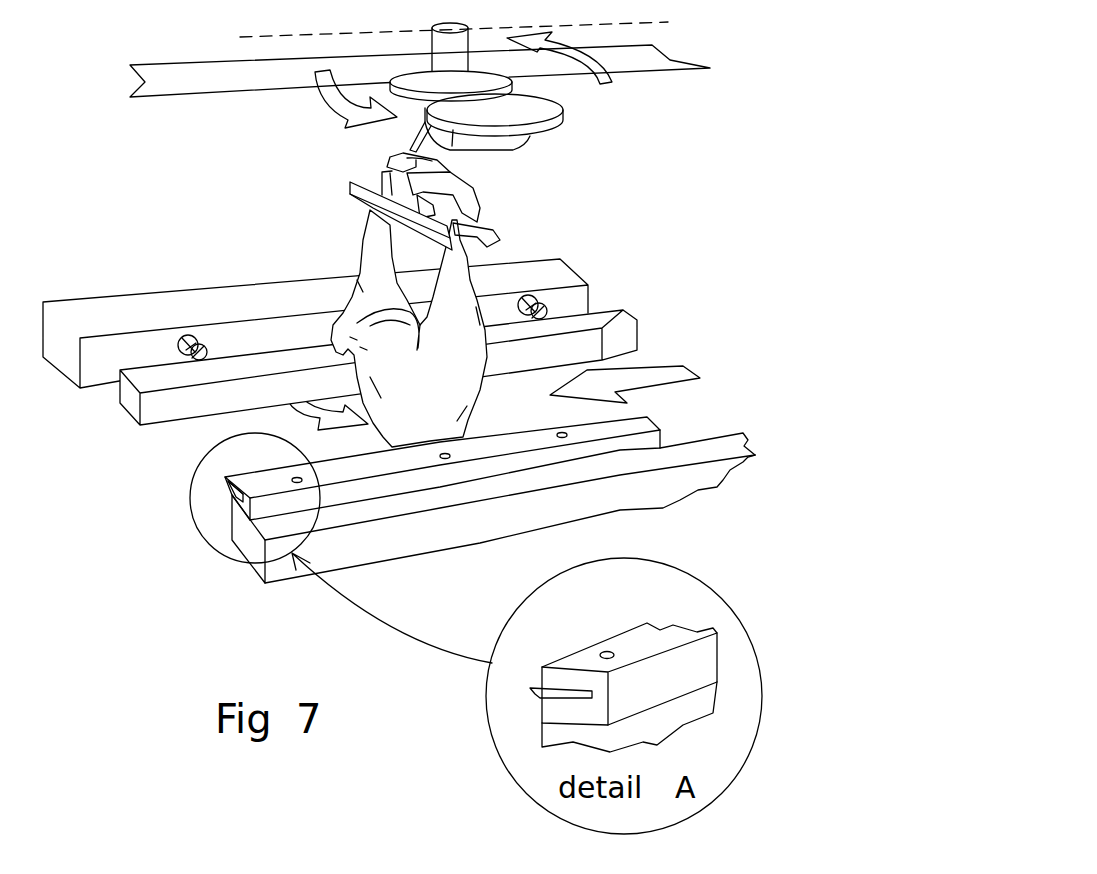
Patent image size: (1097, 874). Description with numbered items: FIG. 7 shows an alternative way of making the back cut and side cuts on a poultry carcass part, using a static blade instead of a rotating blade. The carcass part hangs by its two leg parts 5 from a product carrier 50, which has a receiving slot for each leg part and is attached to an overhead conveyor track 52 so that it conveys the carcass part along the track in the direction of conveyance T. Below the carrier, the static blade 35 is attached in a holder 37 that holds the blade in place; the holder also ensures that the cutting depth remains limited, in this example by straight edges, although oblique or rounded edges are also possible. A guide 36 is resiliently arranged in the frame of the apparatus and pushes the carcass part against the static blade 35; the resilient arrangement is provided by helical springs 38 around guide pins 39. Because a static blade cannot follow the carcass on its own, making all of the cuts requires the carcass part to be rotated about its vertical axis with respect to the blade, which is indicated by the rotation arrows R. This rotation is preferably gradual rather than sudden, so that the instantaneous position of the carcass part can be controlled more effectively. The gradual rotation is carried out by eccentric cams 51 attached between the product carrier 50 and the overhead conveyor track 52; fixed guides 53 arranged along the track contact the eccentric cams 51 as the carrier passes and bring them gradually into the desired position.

The leg parts 5 is at (362, 290).
The static blade 35 is at (224, 479).
The guide 36 is at (627, 337).
The holder 37 is at (243, 508).
The helical springs 38 is at (177, 350).
The guide pins 39 is at (200, 338).
The product carrier 50 is at (472, 217).
The eccentric cams 51 is at (565, 122).
The overhead conveyor track 52 is at (655, 25).
The guides 53 is at (195, 88).
The rotation arrows R is at (367, 123).
The direction of conveyance T is at (662, 368).